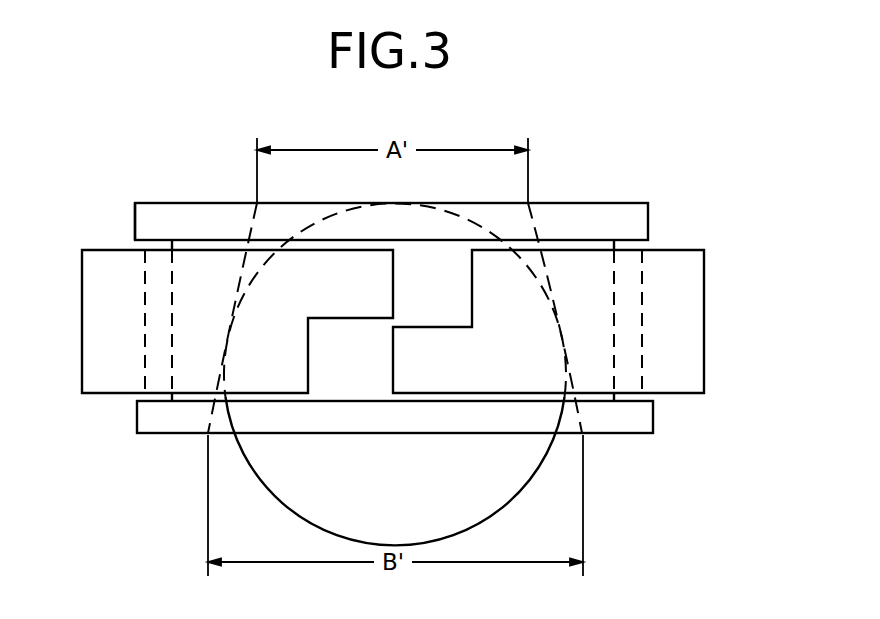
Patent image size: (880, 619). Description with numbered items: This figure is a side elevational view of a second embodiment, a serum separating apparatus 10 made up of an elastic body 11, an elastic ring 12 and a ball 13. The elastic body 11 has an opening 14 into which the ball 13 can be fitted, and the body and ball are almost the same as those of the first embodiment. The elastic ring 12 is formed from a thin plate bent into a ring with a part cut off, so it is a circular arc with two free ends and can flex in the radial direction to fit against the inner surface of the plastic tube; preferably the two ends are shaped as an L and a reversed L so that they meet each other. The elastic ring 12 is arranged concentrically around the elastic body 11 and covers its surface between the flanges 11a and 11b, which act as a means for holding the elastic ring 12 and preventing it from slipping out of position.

The serum separating apparatus 10 is at (773, 189).
The elastic body 11 is at (635, 217).
The flange 11a is at (138, 226).
The flange 11b is at (143, 418).
The elastic ring 12 is at (687, 327).
The ball 13 is at (523, 453).
The opening 14 is at (213, 408).